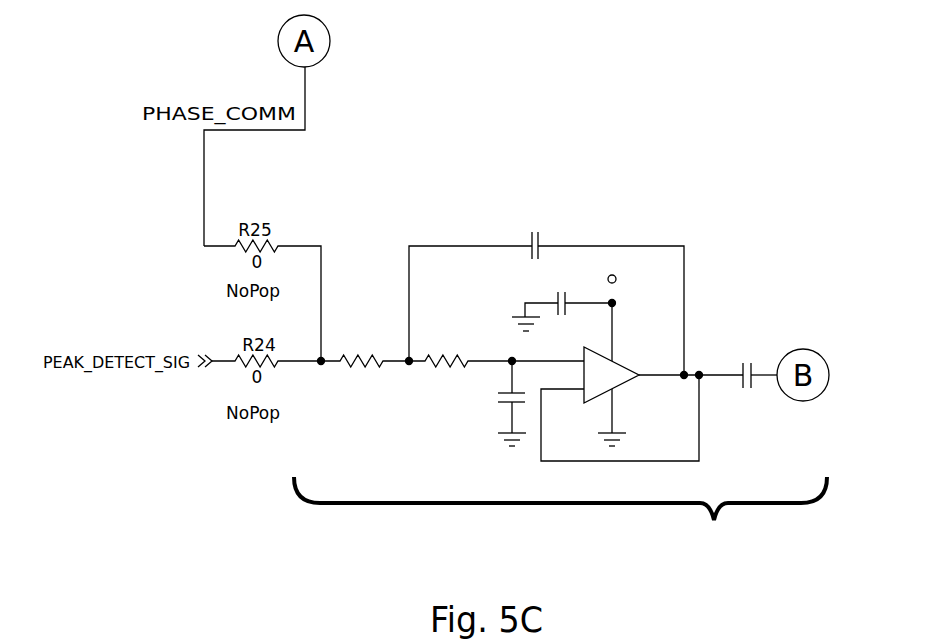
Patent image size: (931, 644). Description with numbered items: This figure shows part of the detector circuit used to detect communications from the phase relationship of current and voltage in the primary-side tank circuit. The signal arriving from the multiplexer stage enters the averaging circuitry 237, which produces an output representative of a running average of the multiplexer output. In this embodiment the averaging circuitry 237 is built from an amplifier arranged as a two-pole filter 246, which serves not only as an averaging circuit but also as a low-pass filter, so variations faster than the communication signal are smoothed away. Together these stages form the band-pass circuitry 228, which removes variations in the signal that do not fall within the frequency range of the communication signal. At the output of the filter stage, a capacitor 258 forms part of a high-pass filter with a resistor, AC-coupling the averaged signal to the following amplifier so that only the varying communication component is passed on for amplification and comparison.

The band-pass circuitry 228 is at (560, 369).
The averaging circuitry 237 is at (420, 406).
The 2-pole filter 246 is at (512, 471).
The capacitor 258 is at (740, 368).